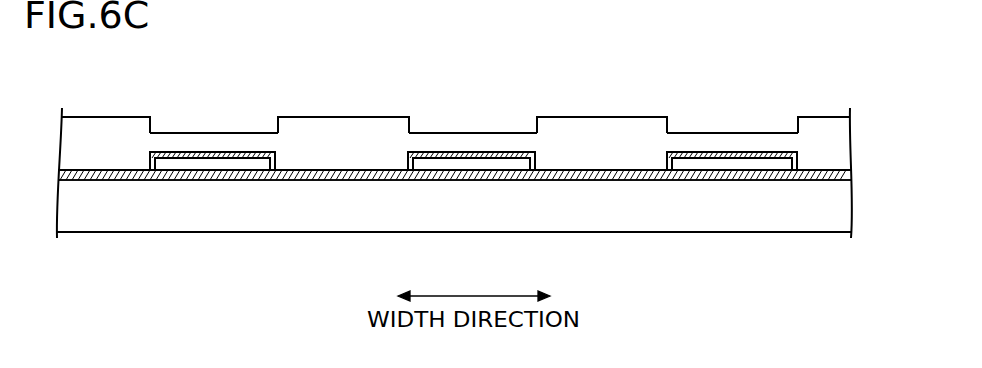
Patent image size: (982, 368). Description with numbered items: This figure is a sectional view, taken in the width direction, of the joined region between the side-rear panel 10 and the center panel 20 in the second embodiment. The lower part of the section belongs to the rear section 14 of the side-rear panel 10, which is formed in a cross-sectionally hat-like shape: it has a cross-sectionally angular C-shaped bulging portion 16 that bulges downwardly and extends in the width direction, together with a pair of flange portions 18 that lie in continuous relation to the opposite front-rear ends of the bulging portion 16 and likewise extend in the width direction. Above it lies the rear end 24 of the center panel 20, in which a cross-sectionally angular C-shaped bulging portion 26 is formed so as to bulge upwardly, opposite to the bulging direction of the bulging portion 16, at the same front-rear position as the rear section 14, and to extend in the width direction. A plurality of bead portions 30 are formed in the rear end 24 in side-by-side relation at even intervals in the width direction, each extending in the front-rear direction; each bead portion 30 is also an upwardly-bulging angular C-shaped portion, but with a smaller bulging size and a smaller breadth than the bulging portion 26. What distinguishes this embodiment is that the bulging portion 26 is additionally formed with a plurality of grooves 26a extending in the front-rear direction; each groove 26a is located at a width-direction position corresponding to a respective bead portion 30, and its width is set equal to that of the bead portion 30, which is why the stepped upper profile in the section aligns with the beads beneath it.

The side-rear panel 10 is at (454, 215).
The rear section 14 is at (305, 232).
The bulging portion 16 is at (203, 233).
The flange portions 18 is at (108, 182).
The center panel 20 is at (456, 86).
The rear end 24 is at (578, 110).
The bulging portion 26 is at (360, 116).
The grooves 26a is at (228, 132).
The bead portions 30 is at (175, 151).